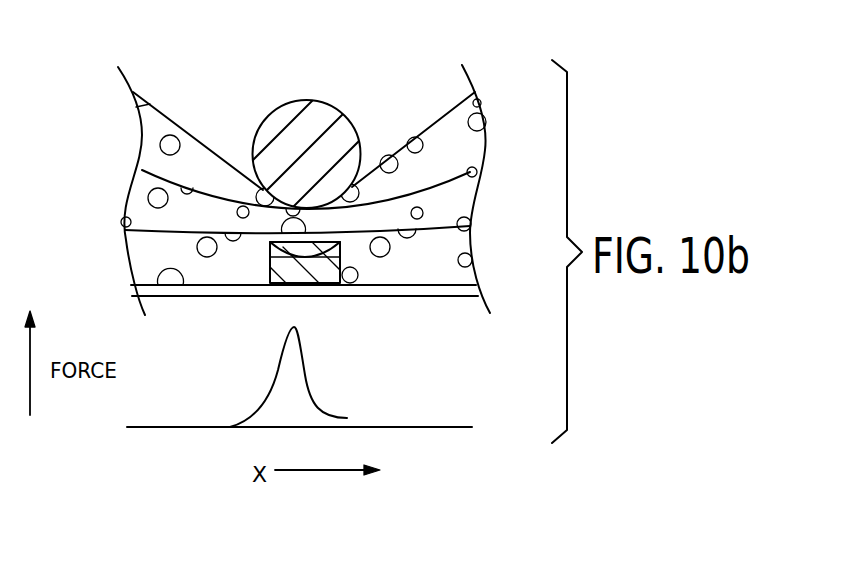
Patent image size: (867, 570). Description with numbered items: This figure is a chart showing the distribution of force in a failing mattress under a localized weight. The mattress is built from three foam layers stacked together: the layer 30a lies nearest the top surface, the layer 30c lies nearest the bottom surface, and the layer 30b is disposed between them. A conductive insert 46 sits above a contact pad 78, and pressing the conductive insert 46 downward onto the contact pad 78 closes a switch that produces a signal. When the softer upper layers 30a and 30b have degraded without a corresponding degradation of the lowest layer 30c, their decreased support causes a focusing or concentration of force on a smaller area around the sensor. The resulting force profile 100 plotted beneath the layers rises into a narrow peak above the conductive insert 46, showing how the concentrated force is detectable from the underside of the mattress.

The layer 30a is at (462, 138).
The layer 30b is at (458, 207).
The layer 30c is at (452, 252).
The conductive insert 46 is at (285, 266).
The contact pad 78 is at (378, 297).
The force profile curve 100 is at (308, 388).